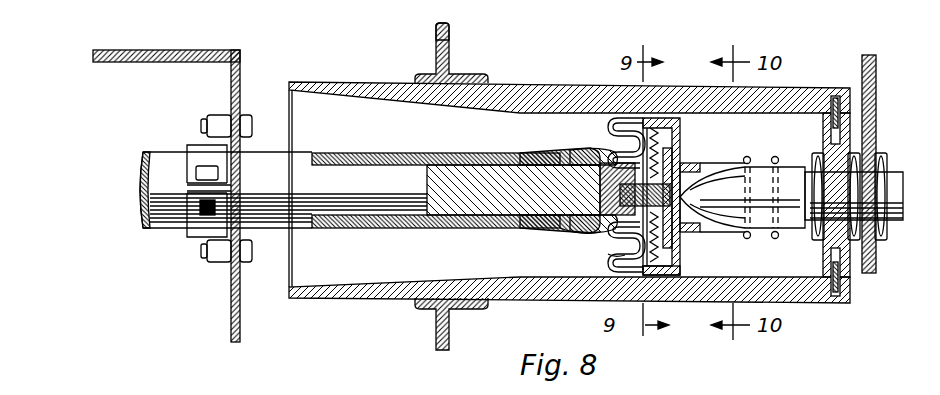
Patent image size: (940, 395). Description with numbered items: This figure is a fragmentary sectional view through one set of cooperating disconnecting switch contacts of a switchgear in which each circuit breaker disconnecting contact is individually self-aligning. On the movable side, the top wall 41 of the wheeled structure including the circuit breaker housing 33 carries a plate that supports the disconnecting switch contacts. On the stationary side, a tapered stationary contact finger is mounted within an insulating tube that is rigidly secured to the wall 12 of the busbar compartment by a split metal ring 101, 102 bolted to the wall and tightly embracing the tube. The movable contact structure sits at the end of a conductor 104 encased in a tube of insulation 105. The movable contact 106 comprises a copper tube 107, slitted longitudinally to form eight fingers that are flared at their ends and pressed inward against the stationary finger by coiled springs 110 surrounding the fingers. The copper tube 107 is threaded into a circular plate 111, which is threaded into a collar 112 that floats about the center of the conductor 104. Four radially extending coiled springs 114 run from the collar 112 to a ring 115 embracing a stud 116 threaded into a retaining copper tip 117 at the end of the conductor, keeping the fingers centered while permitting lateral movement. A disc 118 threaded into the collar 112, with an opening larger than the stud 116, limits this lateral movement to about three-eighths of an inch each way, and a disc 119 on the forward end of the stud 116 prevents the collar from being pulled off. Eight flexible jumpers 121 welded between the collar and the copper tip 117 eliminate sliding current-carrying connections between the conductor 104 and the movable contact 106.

The top wall 41 is at (133, 50).
The circuit breaker housing 33 is at (133, 86).
The wall of the busbar compartment 12 is at (446, 30).
The split metal ring 102 is at (450, 53).
The split metal ring 101 is at (450, 337).
The tube of insulation 105 is at (344, 229).
The conductor 104 is at (455, 202).
The retaining copper tip 117 is at (590, 152).
The stud 116 is at (614, 150).
The flexible jumpers 121 is at (610, 122).
The disc 118 is at (640, 126).
The disc 119 is at (673, 243).
The circular plate 111 is at (682, 124).
The collar 112 is at (681, 270).
The copper tube 107 is at (693, 166).
The movable contact 106 is at (738, 222).
The coiled springs 110 is at (775, 157).
The ring 115 is at (596, 232).
The radially extending coiled springs 114 is at (624, 250).